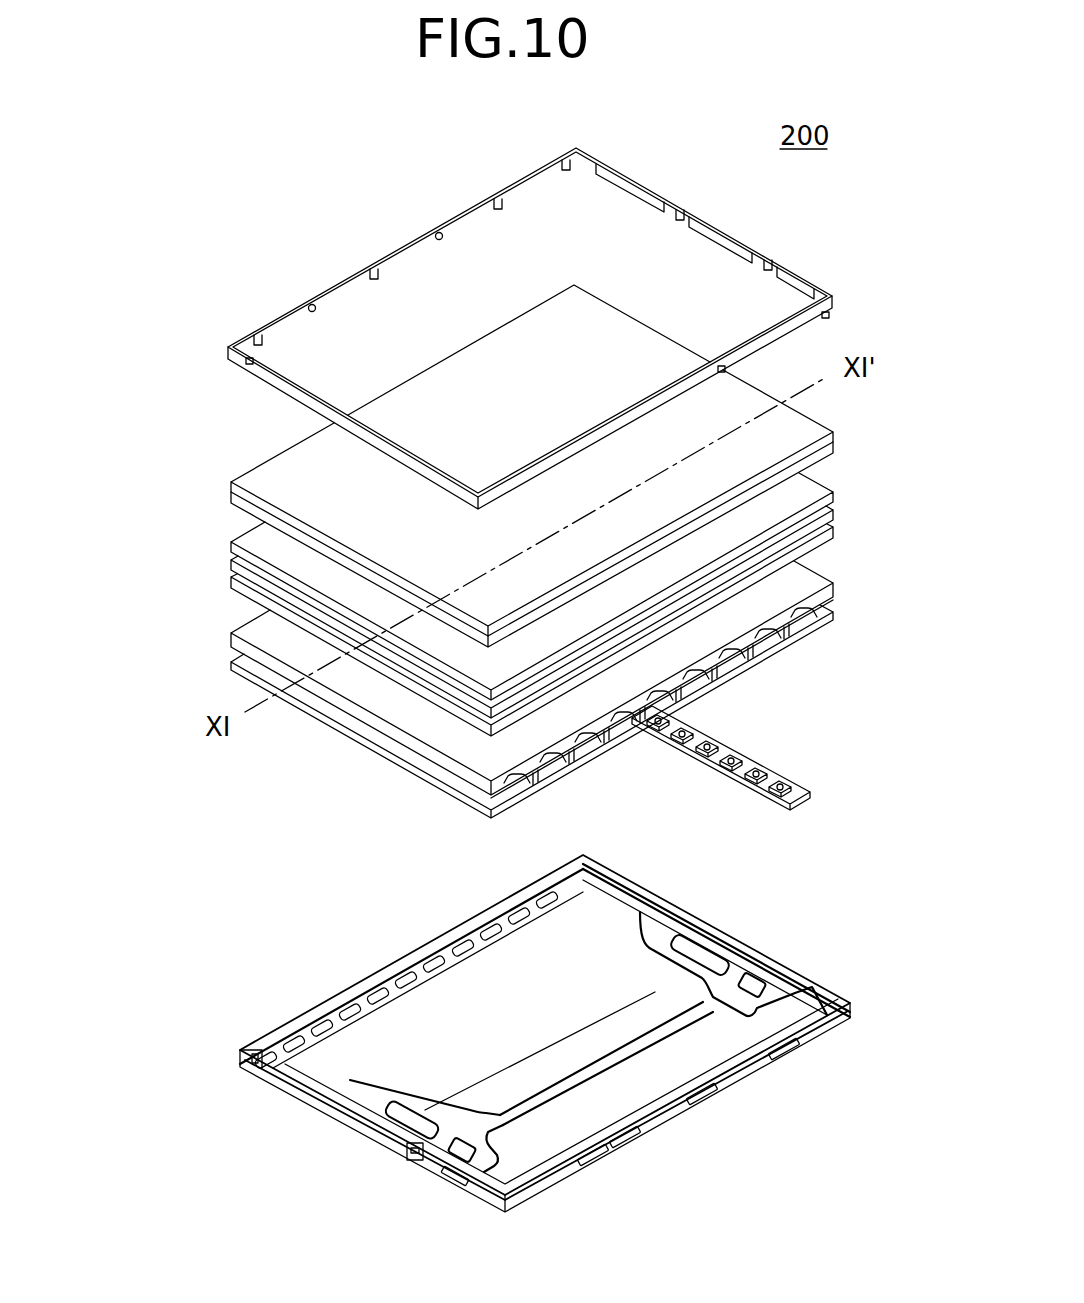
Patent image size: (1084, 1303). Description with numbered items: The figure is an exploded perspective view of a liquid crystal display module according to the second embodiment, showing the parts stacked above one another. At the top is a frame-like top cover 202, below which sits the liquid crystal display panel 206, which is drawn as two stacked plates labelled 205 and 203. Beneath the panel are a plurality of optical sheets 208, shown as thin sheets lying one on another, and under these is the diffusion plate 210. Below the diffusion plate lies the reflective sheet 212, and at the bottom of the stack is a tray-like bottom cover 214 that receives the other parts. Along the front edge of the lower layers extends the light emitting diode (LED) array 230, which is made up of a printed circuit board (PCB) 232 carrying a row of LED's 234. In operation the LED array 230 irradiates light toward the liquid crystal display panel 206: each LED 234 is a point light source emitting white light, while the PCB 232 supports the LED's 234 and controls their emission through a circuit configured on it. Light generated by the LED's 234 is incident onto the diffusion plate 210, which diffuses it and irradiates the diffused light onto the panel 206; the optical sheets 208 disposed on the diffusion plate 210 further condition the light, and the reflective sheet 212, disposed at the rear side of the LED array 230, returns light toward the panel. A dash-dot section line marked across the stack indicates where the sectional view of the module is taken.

The top chassis 202 is at (815, 285).
The lower substrate 203 is at (232, 498).
The upper substrate 205 is at (232, 486).
The liquid crystal display panel 206 is at (447, 466).
The optical sheets 208 is at (840, 497).
The diffusion plate 210 is at (836, 586).
The reflective sheet 212 is at (836, 609).
The bottom chassis 214 is at (768, 964).
The light emitting diode (LED) array 230 is at (789, 758).
The printed circuit board (PCB) 232 is at (802, 793).
The LED 234 is at (788, 777).